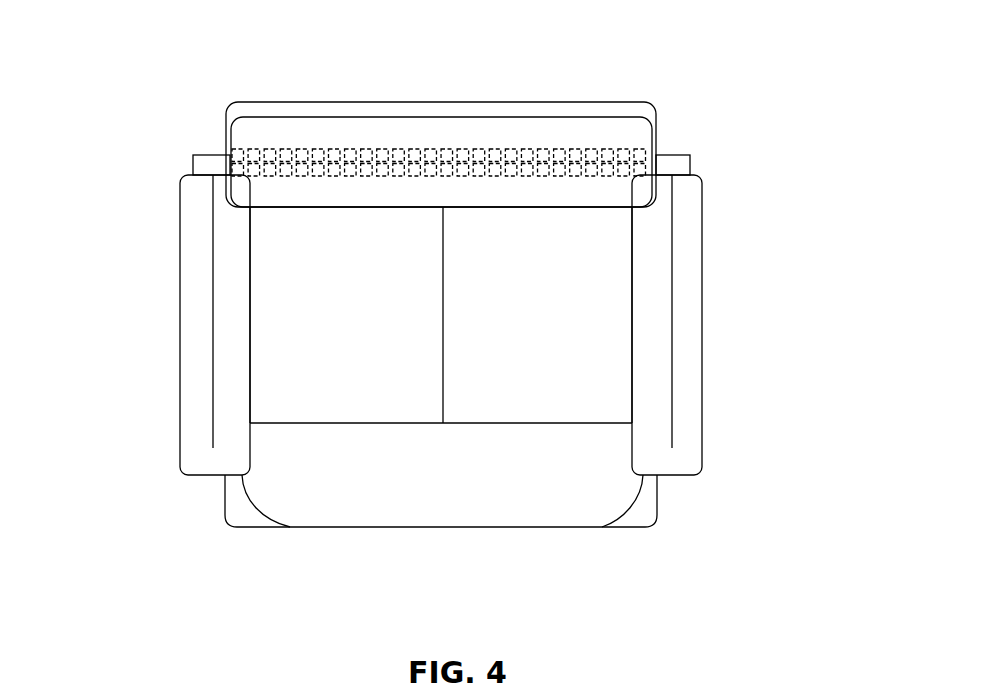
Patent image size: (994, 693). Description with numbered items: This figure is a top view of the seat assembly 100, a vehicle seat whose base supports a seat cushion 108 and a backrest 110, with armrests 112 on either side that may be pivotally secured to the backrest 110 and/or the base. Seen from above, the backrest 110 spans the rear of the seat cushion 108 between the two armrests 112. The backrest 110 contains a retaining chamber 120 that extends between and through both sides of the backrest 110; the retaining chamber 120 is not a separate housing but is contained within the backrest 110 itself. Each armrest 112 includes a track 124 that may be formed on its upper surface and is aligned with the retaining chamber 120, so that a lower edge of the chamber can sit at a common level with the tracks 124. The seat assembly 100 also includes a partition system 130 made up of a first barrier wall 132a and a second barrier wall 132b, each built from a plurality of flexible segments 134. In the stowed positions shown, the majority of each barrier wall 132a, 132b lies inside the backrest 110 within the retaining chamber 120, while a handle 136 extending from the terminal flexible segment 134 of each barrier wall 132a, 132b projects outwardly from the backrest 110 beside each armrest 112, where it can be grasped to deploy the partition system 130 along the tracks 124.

The seat assembly 100 is at (445, 381).
The seat cushion 108 is at (498, 392).
The backrest 110 is at (648, 101).
The armrests 112 is at (195, 315).
The retaining chamber 120 is at (434, 132).
The track 124 is at (213, 260).
The partition system 130 is at (486, 161).
The first barrier wall 132a is at (267, 147).
The second barrier wall 132b is at (585, 170).
The flexible segments 134 is at (468, 287).
The handle 136 is at (210, 153).